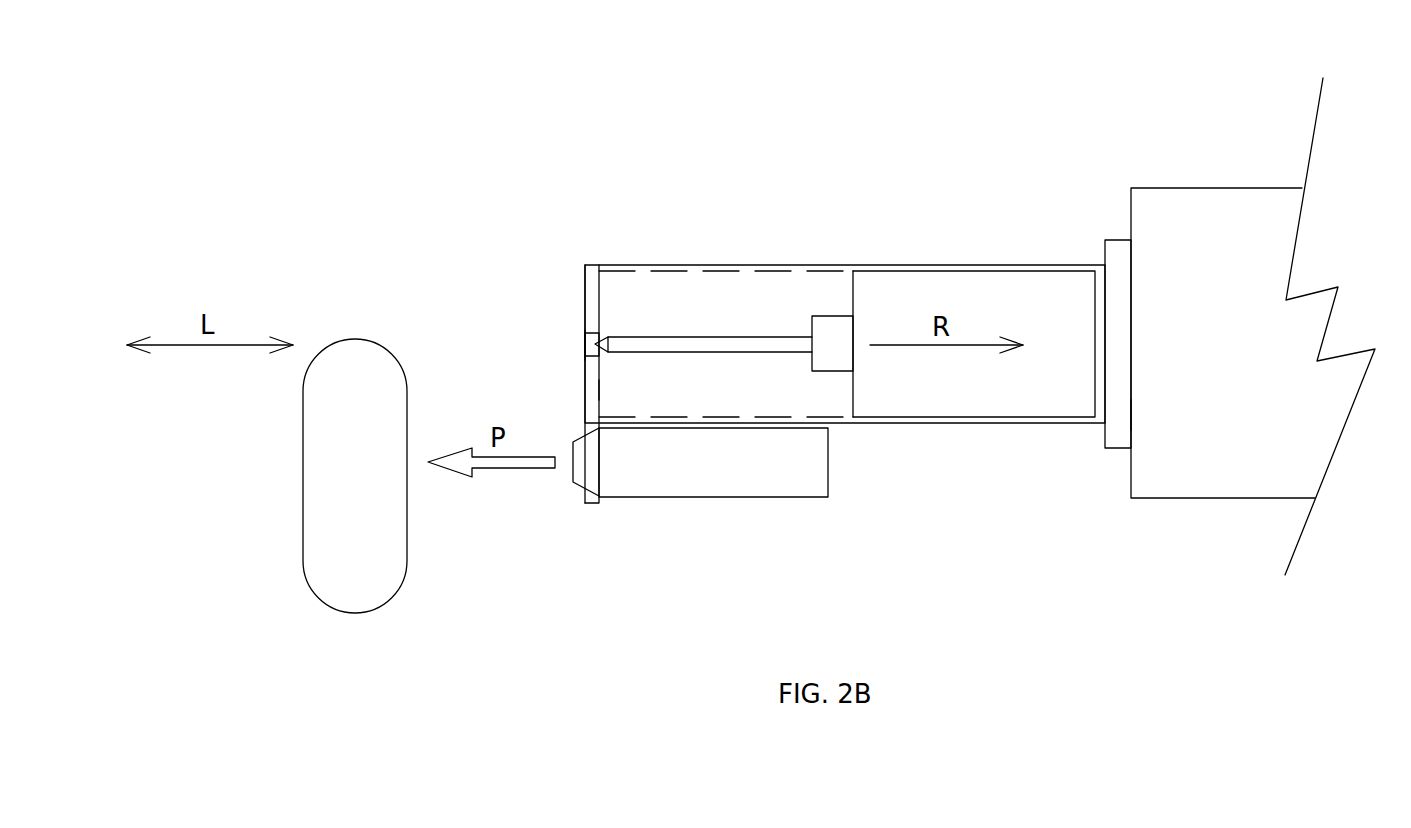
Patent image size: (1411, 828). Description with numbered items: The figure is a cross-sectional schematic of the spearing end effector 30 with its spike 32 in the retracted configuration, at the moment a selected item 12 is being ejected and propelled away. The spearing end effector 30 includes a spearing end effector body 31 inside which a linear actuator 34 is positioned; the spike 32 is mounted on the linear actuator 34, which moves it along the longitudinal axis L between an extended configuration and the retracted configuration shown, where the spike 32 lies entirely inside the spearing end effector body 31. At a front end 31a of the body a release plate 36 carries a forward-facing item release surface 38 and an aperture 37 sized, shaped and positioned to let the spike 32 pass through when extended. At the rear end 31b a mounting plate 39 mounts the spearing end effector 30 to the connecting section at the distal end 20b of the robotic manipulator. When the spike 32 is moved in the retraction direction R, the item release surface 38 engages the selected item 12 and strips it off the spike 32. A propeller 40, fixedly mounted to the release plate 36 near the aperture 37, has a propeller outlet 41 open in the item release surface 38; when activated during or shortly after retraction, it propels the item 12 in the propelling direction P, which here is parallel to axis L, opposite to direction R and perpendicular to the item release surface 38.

The selected item 12 is at (357, 592).
The spearing end effector 30 is at (1065, 108).
The distal end of the robotic manipulator 20b is at (1130, 200).
The spearing end effector body 31 is at (973, 265).
The front end 31a is at (567, 413).
The rear end 31b is at (1133, 415).
The spike 32 is at (718, 343).
The linear actuator 34 is at (871, 288).
The release plate 36 is at (593, 388).
The aperture 37 is at (585, 337).
The item release surface 38 is at (583, 287).
The mounting plate 39 is at (1118, 252).
The propeller 40 is at (756, 472).
The propeller outlet 41 is at (560, 473).